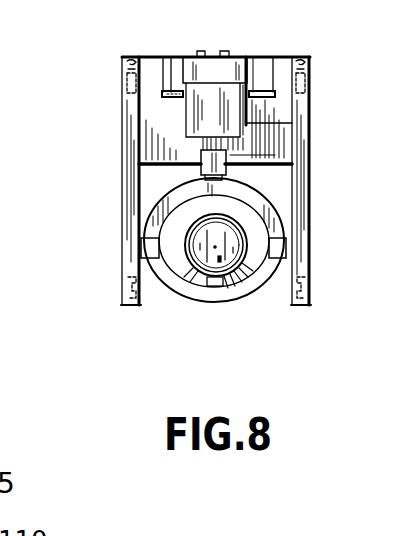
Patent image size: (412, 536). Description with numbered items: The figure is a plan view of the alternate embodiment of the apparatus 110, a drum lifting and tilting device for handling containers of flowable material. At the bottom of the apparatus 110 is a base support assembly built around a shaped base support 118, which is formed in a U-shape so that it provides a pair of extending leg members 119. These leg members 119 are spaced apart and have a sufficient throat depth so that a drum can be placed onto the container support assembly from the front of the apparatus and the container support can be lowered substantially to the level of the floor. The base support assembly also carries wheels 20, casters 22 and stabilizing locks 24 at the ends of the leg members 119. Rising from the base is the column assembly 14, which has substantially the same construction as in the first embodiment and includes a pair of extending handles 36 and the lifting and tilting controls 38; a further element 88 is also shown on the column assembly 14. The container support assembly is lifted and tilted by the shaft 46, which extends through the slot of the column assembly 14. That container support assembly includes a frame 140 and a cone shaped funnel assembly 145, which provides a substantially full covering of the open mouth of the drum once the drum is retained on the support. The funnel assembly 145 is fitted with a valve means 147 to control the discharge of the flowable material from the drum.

The apparatus 110 is at (34, 171).
The shaped base support 118 is at (111, 190).
The extending leg members 119 is at (120, 274).
The stabilizing locks 24 is at (123, 58).
The casters 22 is at (125, 90).
The wheels 20 is at (140, 296).
The lifting and tilting controls 38 is at (215, 75).
The extending handles 36 is at (172, 57).
The right hanger bracket 88 is at (273, 57).
The column assembly 14 is at (310, 124).
The shaft 46 is at (310, 163).
The frame 140 is at (272, 202).
The valve means 147 is at (210, 260).
The cone shaped funnel assembly 145 is at (232, 295).